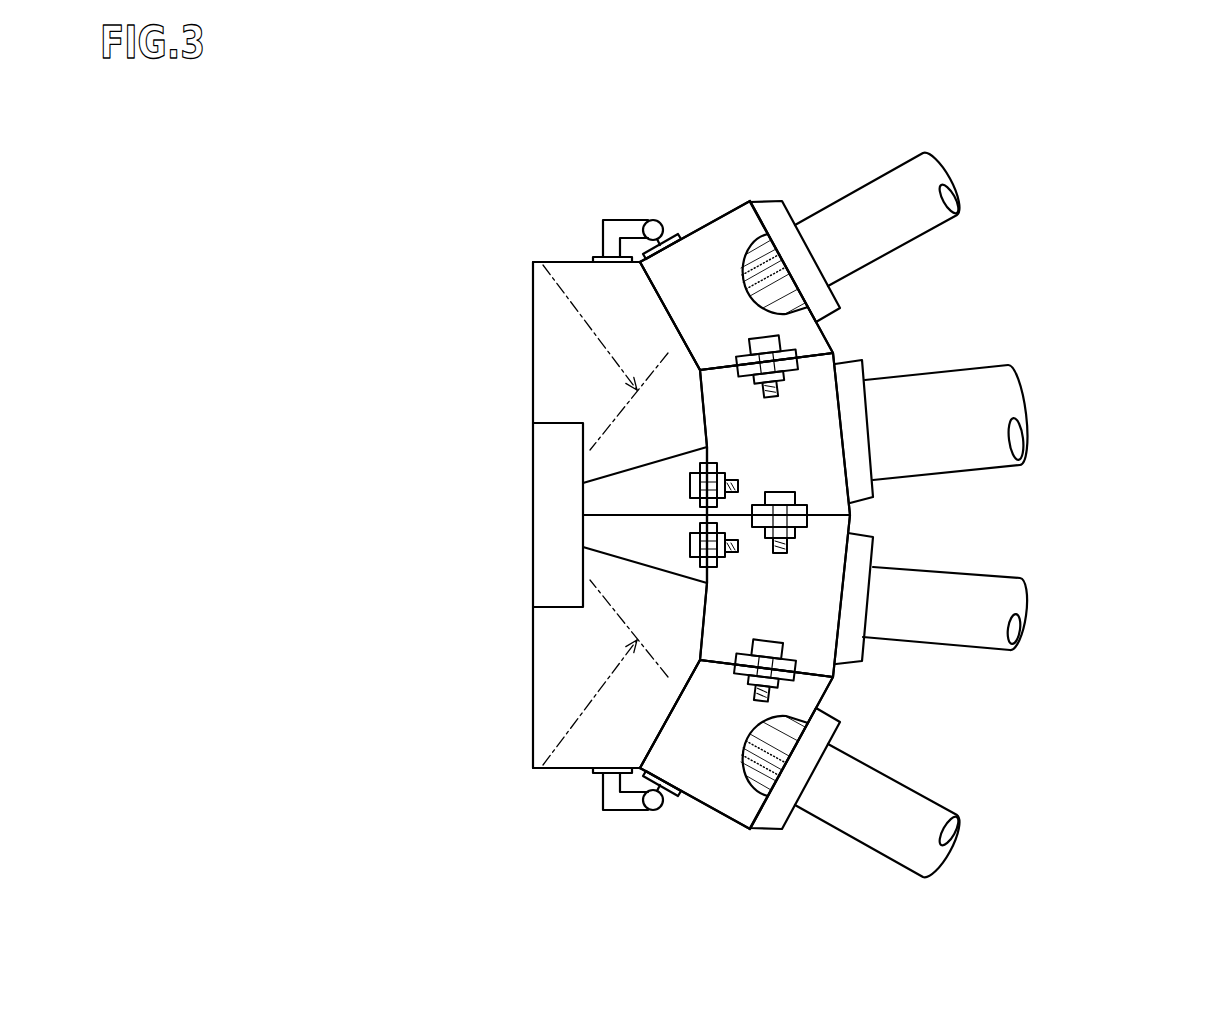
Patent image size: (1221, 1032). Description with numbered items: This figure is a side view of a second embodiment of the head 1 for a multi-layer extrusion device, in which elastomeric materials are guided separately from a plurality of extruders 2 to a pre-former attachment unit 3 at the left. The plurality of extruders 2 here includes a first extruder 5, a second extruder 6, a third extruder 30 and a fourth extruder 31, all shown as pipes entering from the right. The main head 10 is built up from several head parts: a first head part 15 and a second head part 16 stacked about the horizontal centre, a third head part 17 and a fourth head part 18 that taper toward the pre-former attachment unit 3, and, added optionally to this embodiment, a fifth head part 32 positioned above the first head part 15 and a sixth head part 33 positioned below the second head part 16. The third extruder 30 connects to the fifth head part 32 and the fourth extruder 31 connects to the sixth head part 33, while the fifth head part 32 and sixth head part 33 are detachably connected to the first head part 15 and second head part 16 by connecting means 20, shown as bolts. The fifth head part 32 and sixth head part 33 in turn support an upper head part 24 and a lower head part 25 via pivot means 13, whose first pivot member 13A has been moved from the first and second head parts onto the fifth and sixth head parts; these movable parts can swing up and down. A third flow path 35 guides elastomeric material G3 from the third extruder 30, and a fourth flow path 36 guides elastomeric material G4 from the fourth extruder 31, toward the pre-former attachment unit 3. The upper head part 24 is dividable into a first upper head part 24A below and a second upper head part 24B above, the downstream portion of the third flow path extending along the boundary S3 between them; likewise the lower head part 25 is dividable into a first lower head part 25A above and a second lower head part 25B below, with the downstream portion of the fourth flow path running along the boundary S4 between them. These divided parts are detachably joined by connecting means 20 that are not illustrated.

The head 1 is at (547, 202).
The extruders 2 is at (1152, 323).
The pre-former attachment unit 3 is at (557, 423).
The first extruder 5 is at (990, 469).
The second extruder 6 is at (990, 577).
The main head 10 is at (752, 178).
The pivot means 13 is at (625, 210).
The first pivot member 13A is at (670, 226).
The first head part 15 is at (813, 435).
The second head part 16 is at (813, 597).
The third head part 17 is at (623, 497).
The fourth head part 18 is at (623, 535).
The connecting means 20 is at (800, 347).
The upper head part 24 is at (415, 282).
The first upper head part 24A is at (640, 447).
The second upper head part 24B is at (572, 347).
The lower head part 25 is at (415, 640).
The first lower head part 25A is at (640, 583).
The second lower head part 25B is at (572, 683).
The third extruder 30 is at (925, 237).
The fourth extruder 31 is at (925, 793).
The fifth head part 32 is at (736, 230).
The sixth head part 33 is at (720, 783).
The third flow path 35 is at (783, 260).
The fourth flow path 36 is at (775, 770).
The elastomeric material G3 is at (763, 273).
The elastomeric material G4 is at (763, 757).
The boundary S3 is at (533, 260).
The boundary S4 is at (533, 770).